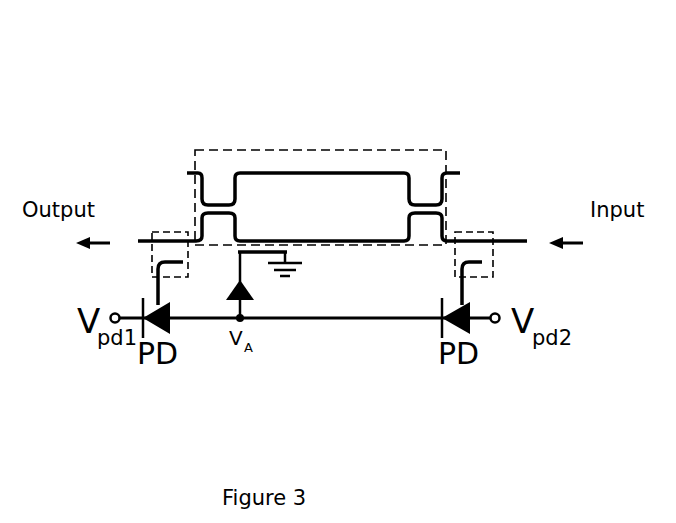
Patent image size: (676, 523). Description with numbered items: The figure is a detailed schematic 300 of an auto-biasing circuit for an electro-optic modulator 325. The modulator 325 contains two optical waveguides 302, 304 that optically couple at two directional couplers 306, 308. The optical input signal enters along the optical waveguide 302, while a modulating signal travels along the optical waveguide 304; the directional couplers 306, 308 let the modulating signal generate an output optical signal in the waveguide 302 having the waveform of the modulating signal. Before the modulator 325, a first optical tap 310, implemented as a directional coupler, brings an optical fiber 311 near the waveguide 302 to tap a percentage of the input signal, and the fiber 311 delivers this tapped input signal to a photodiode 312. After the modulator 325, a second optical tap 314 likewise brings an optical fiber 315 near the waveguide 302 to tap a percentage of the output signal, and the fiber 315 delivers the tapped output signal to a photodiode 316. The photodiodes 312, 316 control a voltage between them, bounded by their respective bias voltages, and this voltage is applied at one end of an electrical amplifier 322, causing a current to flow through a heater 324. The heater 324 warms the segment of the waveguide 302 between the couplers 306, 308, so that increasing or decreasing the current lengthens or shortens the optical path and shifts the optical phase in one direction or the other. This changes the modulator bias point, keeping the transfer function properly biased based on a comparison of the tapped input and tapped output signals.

The detailed schematic 300 is at (531, 67).
The optical waveguide 302 is at (333, 240).
The optical waveguide 304 is at (312, 173).
The directional coupler 306 is at (428, 194).
The directional coupler 308 is at (219, 192).
The first optical tap 310 is at (480, 232).
The optical fiber 311 is at (458, 290).
The photodiode 312 is at (468, 332).
The second optical tap 314 is at (172, 232).
The optical fiber 315 is at (157, 290).
The photodiode 316 is at (170, 330).
The electrical amplifier 322 is at (250, 305).
The heater 324 is at (256, 254).
The electro-optic modulator 325 is at (233, 148).